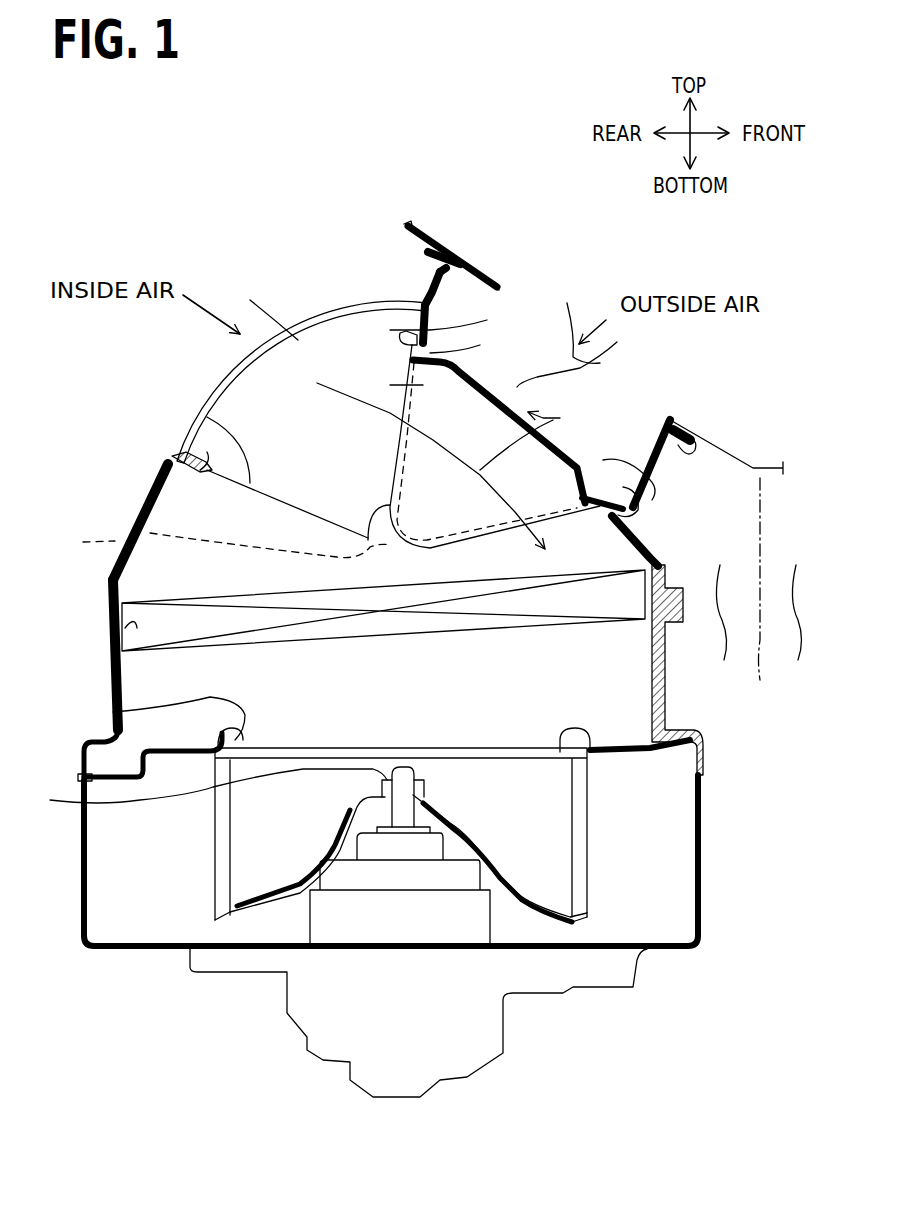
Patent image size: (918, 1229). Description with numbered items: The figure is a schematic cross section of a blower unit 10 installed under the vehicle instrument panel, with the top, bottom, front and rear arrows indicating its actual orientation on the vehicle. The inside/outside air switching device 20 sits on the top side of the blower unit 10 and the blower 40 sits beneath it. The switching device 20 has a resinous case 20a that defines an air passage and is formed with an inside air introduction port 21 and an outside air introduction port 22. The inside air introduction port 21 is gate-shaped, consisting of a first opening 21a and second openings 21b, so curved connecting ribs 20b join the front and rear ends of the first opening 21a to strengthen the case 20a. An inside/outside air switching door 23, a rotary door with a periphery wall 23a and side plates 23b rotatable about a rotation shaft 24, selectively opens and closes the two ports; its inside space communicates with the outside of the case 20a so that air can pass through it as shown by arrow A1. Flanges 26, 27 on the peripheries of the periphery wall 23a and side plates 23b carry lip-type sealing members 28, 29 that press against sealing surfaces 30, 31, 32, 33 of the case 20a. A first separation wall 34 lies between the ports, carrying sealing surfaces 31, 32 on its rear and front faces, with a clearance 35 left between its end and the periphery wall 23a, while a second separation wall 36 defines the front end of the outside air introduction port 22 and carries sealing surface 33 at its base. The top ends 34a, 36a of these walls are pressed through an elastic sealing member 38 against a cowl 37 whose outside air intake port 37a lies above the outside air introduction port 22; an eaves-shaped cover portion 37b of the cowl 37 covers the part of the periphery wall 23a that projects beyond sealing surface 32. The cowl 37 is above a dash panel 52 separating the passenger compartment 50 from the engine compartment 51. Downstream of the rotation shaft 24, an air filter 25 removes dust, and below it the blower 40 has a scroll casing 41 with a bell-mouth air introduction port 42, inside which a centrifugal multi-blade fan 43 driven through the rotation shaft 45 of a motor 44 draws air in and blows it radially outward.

The blower unit 10 is at (82, 664).
The inside/outside air switching device 20 is at (156, 472).
The resinous case 20a is at (140, 517).
The connecting ribs 20b is at (242, 372).
The inside air introduction port 21 is at (110, 355).
The first opening 21a is at (213, 387).
The second openings 21b is at (217, 420).
The outside air introduction port 22 is at (583, 354).
The inside/outside air switching door 23 is at (575, 408).
The periphery wall 23a is at (580, 321).
The side plates 23b is at (255, 308).
The rotation shaft 24 is at (218, 546).
The air filter 25 is at (137, 628).
The flange 26 is at (325, 318).
The flange 27 is at (647, 550).
The sealing member 28 is at (395, 352).
The sealing member 29 is at (697, 443).
The sealing surface 30 is at (200, 447).
The sealing surface 31 is at (413, 320).
The sealing surface 32 is at (487, 320).
The sealing surface 33 is at (717, 470).
The first separation wall 34 is at (413, 283).
The top end of first separation wall 34a is at (440, 270).
The clearance 35 is at (480, 383).
The second separation wall 36 is at (757, 463).
The top end of second separation wall 36a is at (687, 430).
The cowl 37 is at (437, 247).
The outside air intake port 37a is at (677, 417).
The cover portion 37b is at (500, 277).
The elastic sealing member 38 is at (450, 253).
The blower 40 is at (133, 953).
The scroll casing 41 is at (86, 838).
The air introduction port 42 is at (113, 712).
The centrifugal multi-blade fan 43 is at (215, 872).
The motor 44 is at (317, 913).
The rotation shaft 45 is at (201, 793).
The passenger compartment 50 is at (725, 626).
The engine compartment 51 is at (798, 626).
The dash panel 52 is at (760, 680).
The arrow A1 is at (563, 414).